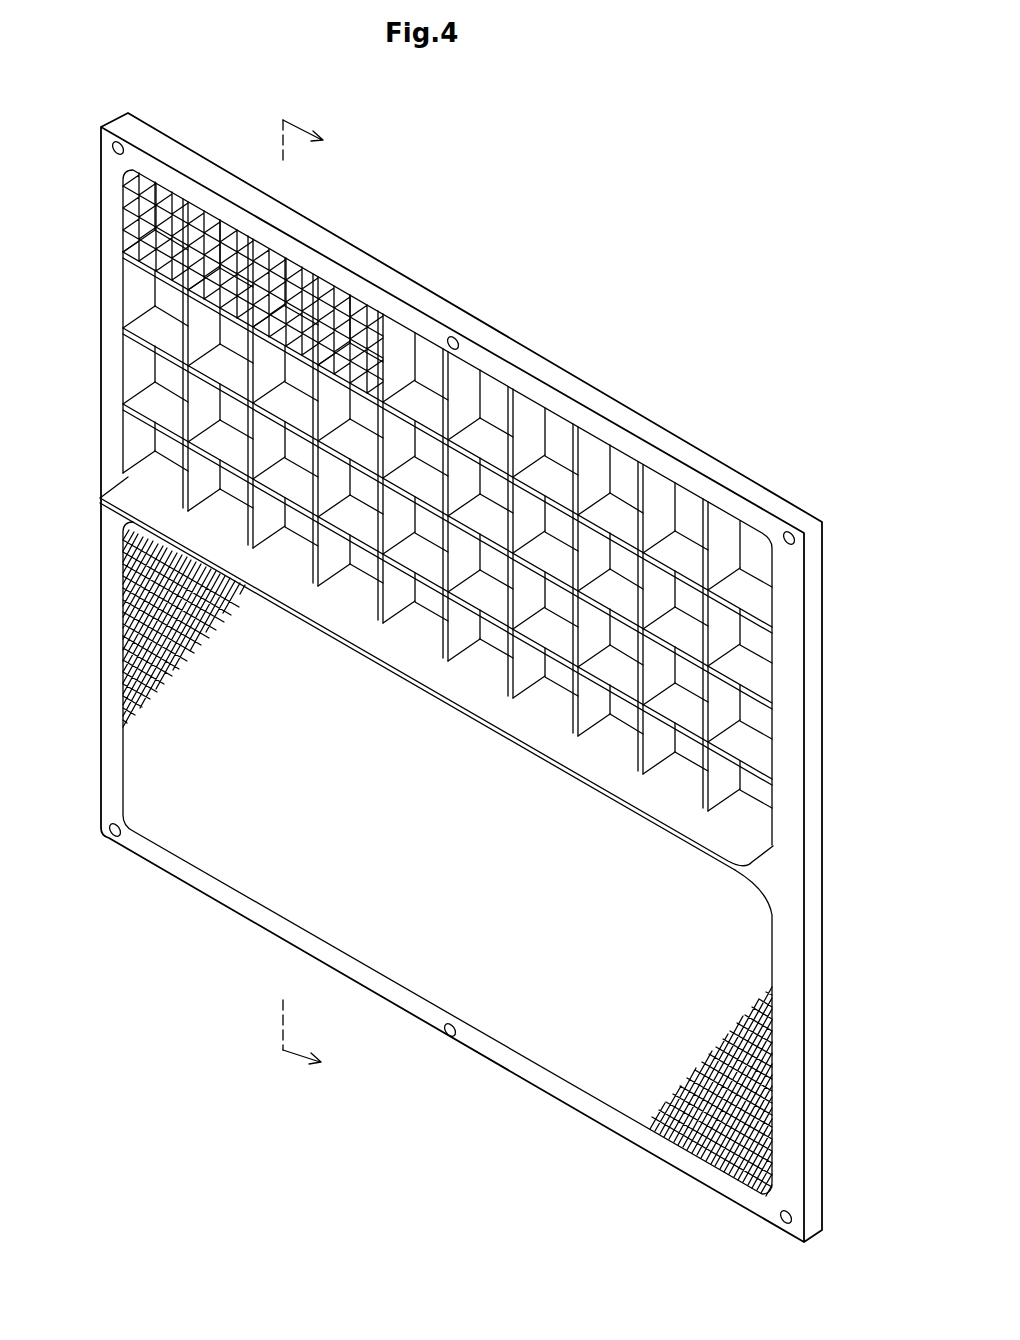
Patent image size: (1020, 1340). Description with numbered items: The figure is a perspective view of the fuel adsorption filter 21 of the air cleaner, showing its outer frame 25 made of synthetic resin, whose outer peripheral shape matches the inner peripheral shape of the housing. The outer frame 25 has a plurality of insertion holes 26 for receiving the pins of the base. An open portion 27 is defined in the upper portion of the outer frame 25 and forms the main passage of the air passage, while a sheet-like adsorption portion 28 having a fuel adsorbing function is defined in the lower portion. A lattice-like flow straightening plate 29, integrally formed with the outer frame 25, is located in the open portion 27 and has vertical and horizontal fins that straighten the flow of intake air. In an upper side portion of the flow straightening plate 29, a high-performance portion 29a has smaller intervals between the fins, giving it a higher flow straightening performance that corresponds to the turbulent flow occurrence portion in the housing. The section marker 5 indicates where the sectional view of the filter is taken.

The fuel adsorption filter 21 is at (534, 352).
The outer frame 25 is at (611, 421).
The insertion holes 26 is at (112, 150).
The open portion 27 is at (461, 496).
The adsorption portion 28 is at (134, 604).
The flow straightening plate 29 is at (765, 740).
The high-performance portion 29a is at (302, 275).
The section line of Fig. 5 is at (316, 601).